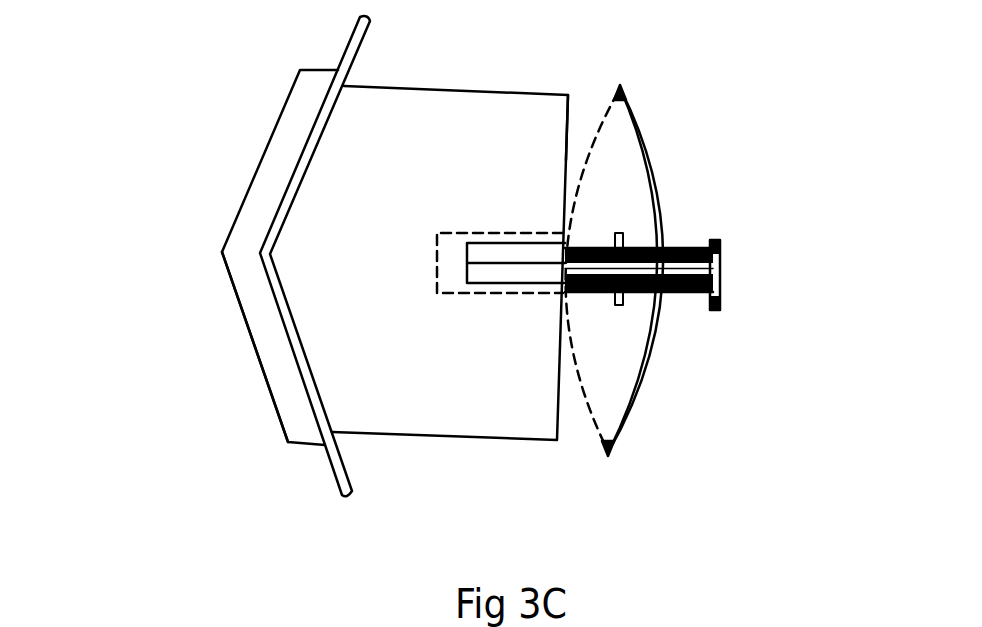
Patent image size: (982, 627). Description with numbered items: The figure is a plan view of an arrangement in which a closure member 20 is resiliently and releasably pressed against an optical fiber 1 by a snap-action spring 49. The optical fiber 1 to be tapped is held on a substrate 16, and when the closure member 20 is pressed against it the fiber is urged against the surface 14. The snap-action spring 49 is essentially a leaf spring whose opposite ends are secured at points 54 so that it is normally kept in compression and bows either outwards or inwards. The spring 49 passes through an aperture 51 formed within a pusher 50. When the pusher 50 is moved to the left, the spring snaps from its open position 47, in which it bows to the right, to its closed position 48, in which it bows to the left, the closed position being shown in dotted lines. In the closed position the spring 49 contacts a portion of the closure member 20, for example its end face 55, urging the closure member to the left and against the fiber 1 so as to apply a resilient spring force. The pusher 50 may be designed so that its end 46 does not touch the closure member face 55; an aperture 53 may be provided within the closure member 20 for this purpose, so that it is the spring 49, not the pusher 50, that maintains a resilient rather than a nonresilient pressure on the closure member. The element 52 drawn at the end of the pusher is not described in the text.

The optical fiber 1 is at (352, 37).
The surface 14 is at (315, 135).
The substrate 16 is at (267, 183).
The closure member 20 is at (388, 184).
The pusher end 46 is at (497, 283).
The open position 47 is at (640, 128).
The closed position 48 is at (603, 112).
The snap-action spring 49 is at (657, 182).
The pusher 50 is at (686, 250).
The aperture 51 is at (686, 293).
The pin head 52 is at (722, 287).
The aperture 53 is at (467, 283).
The points 54 is at (621, 86).
The end face 55 is at (568, 113).